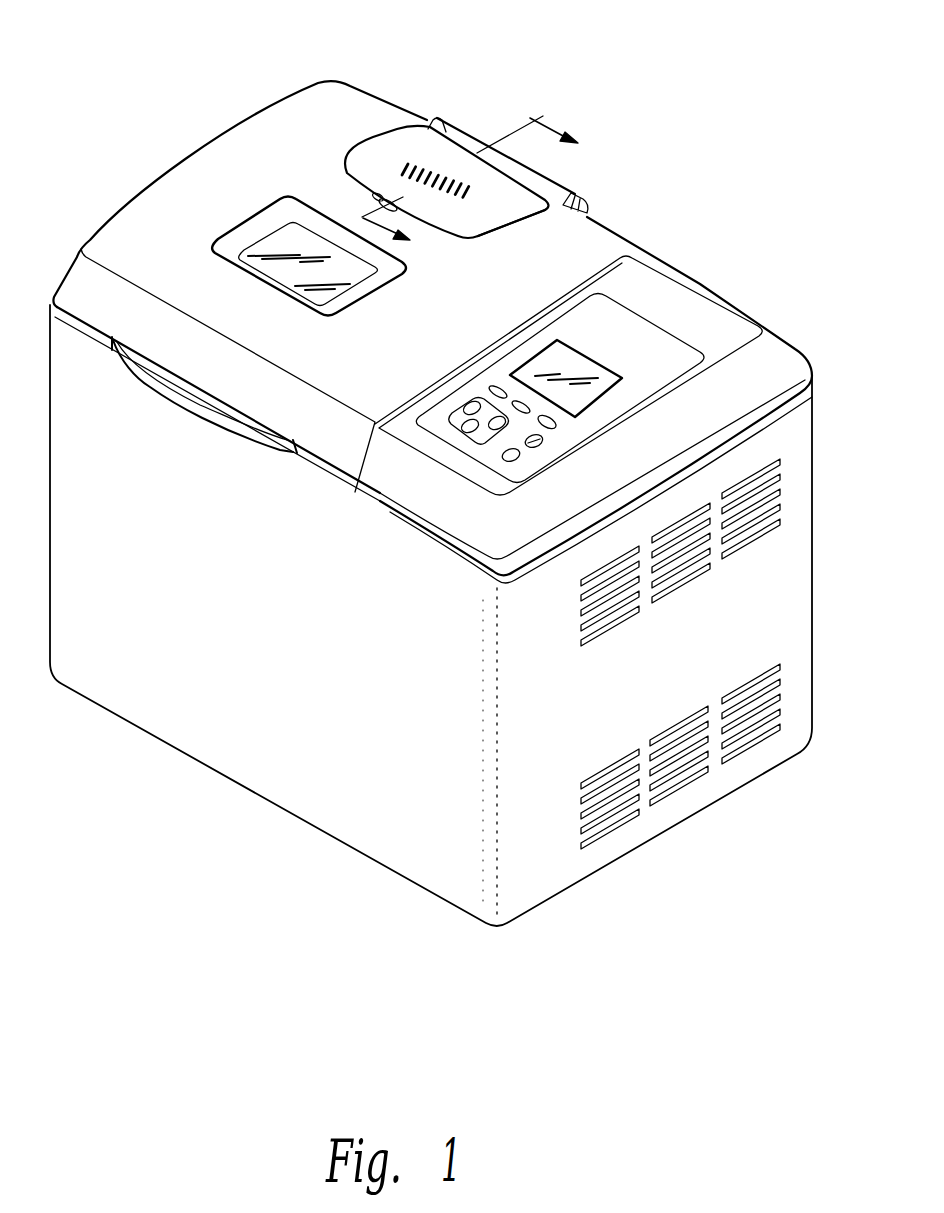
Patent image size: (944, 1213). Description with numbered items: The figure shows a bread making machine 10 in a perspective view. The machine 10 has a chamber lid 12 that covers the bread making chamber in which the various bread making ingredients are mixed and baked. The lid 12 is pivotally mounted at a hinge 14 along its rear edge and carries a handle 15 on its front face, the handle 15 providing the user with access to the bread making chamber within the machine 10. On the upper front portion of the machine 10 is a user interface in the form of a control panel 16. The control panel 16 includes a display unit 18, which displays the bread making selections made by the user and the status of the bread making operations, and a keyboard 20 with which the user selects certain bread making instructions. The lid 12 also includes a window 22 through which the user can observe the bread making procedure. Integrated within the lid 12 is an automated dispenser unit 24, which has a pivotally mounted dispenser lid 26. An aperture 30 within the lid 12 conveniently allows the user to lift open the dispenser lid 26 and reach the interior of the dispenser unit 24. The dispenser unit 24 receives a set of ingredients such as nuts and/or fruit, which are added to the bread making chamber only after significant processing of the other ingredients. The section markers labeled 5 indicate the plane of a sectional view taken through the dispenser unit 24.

The bread making machine 10 is at (683, 164).
The chamber lid 12 is at (190, 157).
The hinge 14 is at (477, 137).
The handle 15 is at (193, 398).
The control panel 16 is at (655, 345).
The display unit 18 is at (615, 378).
The keyboard 20 is at (490, 450).
The window 22 is at (280, 247).
The automated dispenser unit 24 is at (370, 137).
The dispenser lid 26 is at (490, 203).
The aperture 30 is at (373, 197).
The section line 5- 5 is at (460, 165).